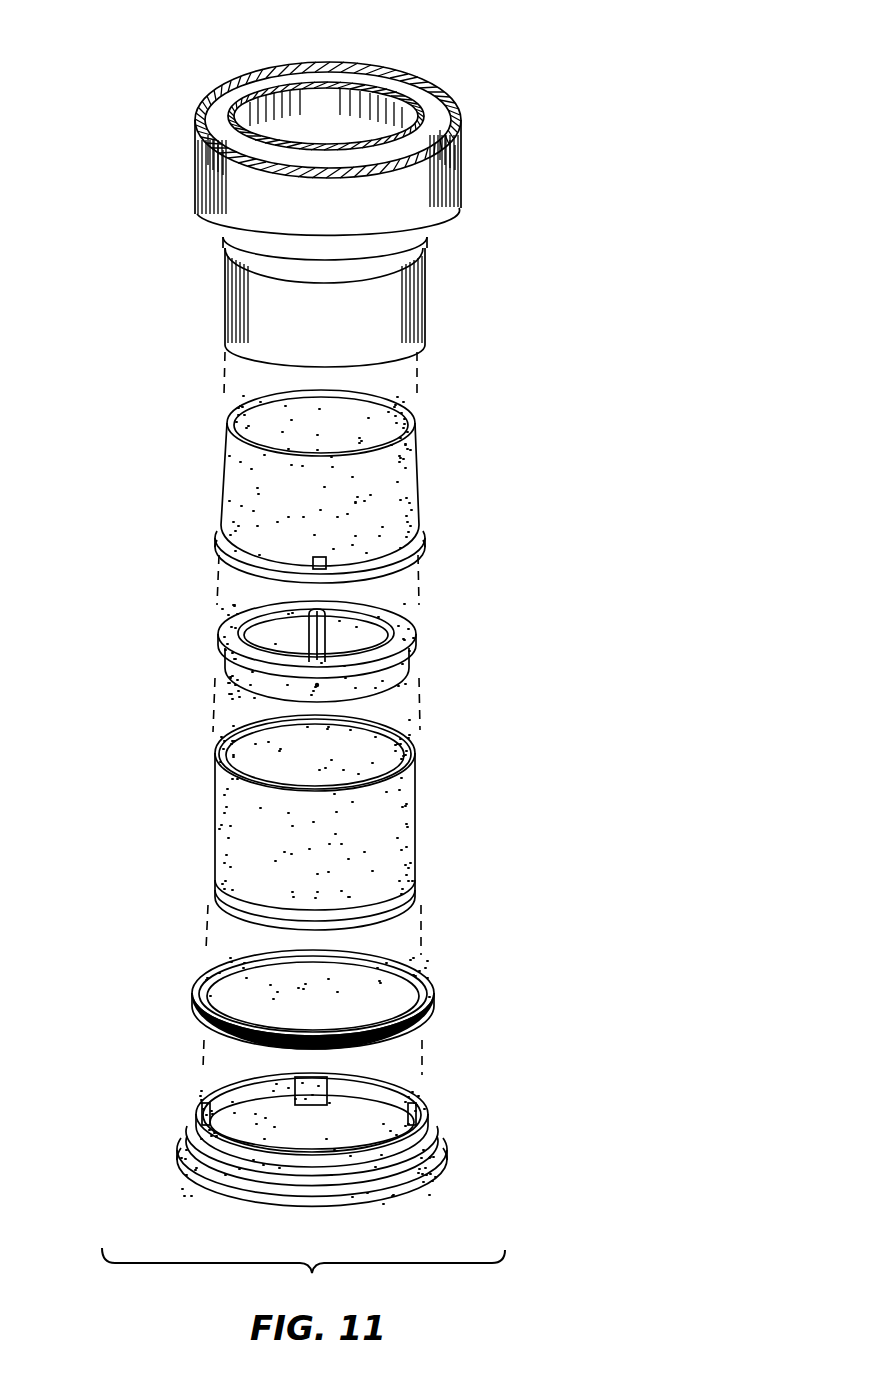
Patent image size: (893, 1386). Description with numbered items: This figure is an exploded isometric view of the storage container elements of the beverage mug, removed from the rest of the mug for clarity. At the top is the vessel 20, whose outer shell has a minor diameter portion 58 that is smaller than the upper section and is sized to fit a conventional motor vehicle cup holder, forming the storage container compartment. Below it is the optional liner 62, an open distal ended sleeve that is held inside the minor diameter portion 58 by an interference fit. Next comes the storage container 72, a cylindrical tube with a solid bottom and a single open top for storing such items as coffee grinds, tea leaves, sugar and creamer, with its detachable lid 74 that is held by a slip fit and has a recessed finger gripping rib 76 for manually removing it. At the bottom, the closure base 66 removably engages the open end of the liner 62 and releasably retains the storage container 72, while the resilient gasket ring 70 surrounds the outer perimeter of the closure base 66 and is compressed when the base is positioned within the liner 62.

The vessel 20 is at (433, 80).
The minor diameter portion 58 is at (225, 303).
The liner 62 is at (418, 515).
The lid 74 is at (411, 670).
The finger gripping rib 76 is at (235, 622).
The storage container 72 is at (213, 815).
The gasket ring 70 is at (435, 993).
The closure base 66 is at (177, 1142).